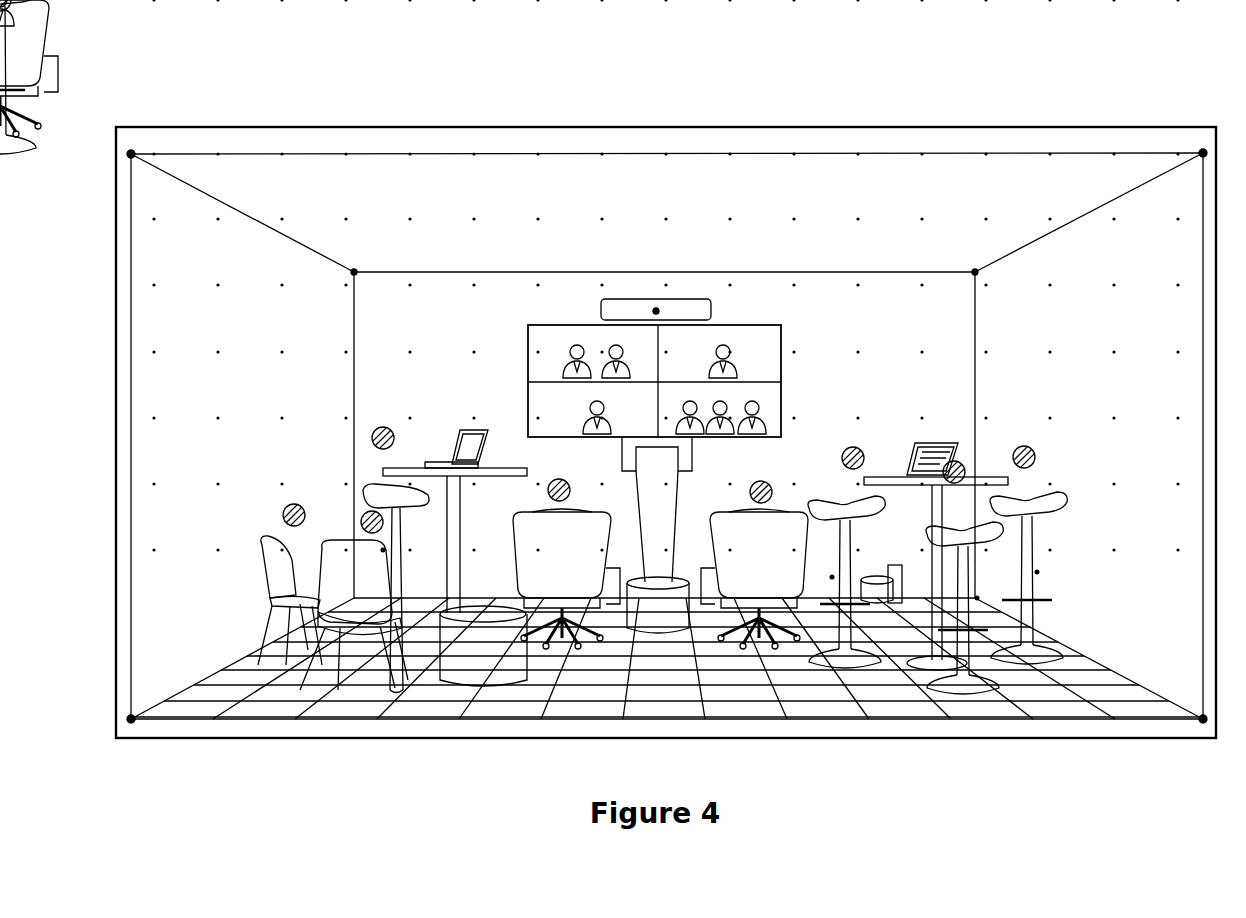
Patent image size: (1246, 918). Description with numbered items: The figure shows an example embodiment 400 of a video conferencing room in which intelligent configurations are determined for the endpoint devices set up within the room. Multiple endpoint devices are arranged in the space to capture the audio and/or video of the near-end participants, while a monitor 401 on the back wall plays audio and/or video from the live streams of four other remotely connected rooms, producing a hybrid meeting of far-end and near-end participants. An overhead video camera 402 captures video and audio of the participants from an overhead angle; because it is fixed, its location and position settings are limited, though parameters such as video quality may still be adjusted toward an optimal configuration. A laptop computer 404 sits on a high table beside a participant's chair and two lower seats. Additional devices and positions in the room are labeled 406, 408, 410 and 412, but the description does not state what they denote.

The example embodiment 400 is at (641, 34).
The monitor 401 is at (772, 355).
The overhead video camera 402 is at (705, 299).
The laptop computer 404 is at (373, 432).
The sensor device 406 is at (286, 508).
The sensor device on table 408 is at (958, 483).
The sensor device 410 is at (762, 503).
The cameras 412 is at (683, 436).